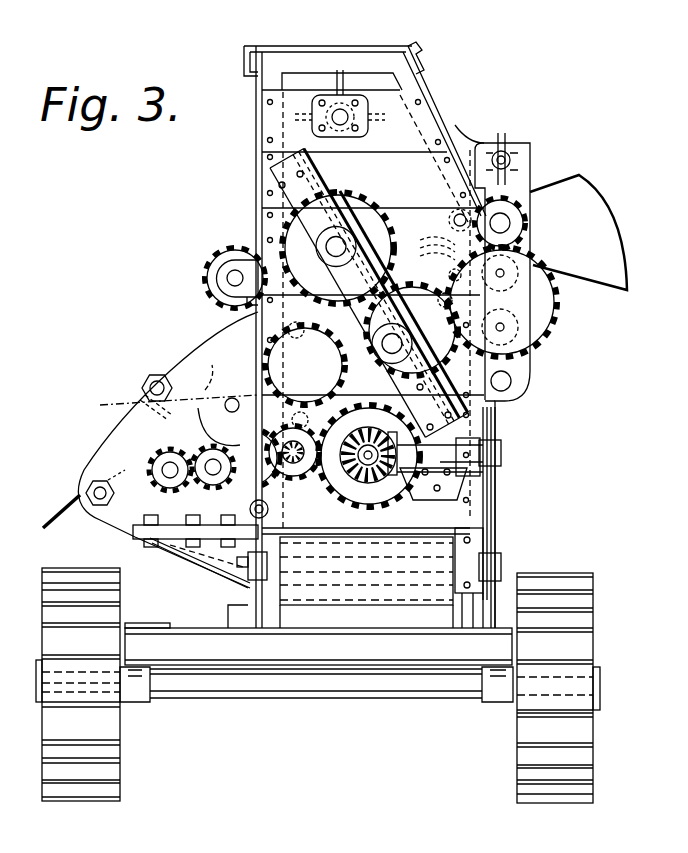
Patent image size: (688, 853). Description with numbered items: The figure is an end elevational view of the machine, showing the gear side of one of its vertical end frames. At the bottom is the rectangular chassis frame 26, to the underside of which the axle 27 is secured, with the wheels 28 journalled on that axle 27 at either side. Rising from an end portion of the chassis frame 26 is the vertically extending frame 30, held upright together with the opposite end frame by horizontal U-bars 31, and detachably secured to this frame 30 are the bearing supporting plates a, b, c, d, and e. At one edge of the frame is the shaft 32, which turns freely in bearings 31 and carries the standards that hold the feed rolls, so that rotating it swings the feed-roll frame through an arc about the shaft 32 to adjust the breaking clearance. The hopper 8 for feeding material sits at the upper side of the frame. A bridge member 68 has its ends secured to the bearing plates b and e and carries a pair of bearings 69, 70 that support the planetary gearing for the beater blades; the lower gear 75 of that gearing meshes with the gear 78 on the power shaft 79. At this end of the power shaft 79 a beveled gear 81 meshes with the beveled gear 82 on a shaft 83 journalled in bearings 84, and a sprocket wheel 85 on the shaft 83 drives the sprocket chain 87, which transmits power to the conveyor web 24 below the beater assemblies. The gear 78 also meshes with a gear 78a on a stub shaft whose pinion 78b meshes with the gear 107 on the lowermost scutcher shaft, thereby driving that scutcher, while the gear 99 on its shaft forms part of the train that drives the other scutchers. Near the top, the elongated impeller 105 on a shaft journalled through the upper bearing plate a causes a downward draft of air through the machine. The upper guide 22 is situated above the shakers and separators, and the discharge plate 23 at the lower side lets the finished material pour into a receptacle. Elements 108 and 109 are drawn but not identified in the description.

The hopper 8 is at (587, 210).
The upper guide 22 is at (140, 390).
The discharge plate 23 is at (62, 510).
The conveyor web 24 is at (385, 600).
The chassis frame 26 is at (335, 668).
The axle 27 is at (397, 695).
The wheels 28 is at (65, 578).
The vertically extending frame 30 is at (409, 82).
The horizontal U-bars 31 is at (245, 60).
The shaft 32 is at (508, 380).
The bridge member 68 is at (347, 232).
The bearing 69 is at (382, 227).
The bearing 70 is at (435, 258).
The gear 75 is at (330, 215).
The gear 78 is at (269, 476).
The gear 78a is at (336, 478).
The pinion 78b is at (200, 541).
The power shaft 79 is at (372, 485).
The beveled gear 81 is at (303, 452).
The beveled gear 82 is at (372, 426).
The shaft 83 is at (445, 455).
The bearings 84 is at (495, 490).
The sprocket wheel 85 is at (501, 466).
The sprocket chain 87 is at (497, 532).
The gear 99 is at (207, 265).
The elongated impeller 105 is at (343, 87).
The gear 107 is at (221, 422).
The link 108 is at (253, 385).
The gear 109 is at (171, 461).
The bearing supporting plate a is at (427, 112).
The bearing supporting plate b is at (258, 165).
The bearing supporting plate c is at (258, 225).
The bearing supporting plate d is at (168, 450).
The bearing supporting plate e is at (470, 431).